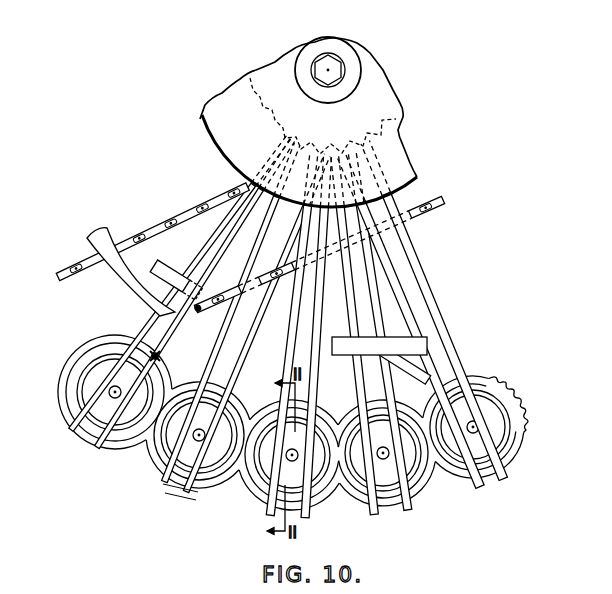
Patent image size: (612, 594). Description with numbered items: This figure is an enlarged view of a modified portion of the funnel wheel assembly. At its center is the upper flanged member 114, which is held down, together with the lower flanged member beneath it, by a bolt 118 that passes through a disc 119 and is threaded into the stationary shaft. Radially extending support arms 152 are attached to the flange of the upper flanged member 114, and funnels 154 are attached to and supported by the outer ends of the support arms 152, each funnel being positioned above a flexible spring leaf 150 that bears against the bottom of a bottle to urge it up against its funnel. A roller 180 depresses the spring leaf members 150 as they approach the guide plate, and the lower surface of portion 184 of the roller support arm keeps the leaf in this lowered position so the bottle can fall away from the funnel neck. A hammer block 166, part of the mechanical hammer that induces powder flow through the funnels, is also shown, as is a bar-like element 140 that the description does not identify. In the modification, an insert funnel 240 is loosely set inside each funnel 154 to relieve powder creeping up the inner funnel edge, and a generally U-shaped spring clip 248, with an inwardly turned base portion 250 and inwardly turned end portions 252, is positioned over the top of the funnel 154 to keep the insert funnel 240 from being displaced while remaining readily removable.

The upper flanged member 114 is at (402, 132).
The bolt 118 is at (336, 64).
The disc 119 is at (357, 67).
The tie bar 140 is at (180, 216).
The spring leaf member 150 is at (433, 292).
The support arm 152 is at (240, 345).
The funnel 154 is at (62, 403).
The hammer block 166 is at (352, 350).
The roller 180 is at (164, 268).
The portion of the roller support arm 184 is at (94, 239).
The insert funnel 240 is at (160, 474).
The spring clip 248 is at (130, 424).
The base portion 250 is at (181, 496).
The end portions 252 is at (160, 356).